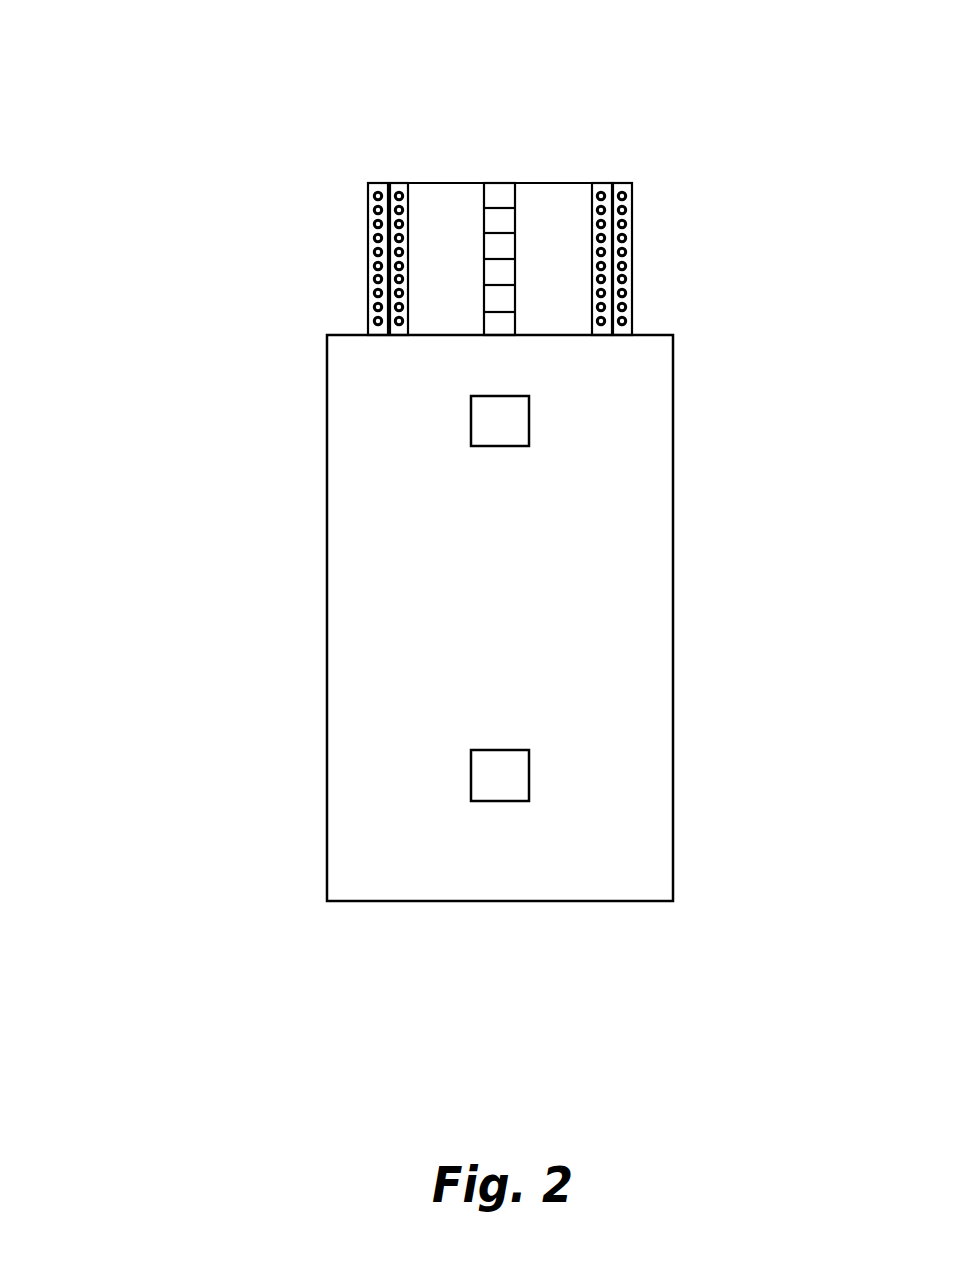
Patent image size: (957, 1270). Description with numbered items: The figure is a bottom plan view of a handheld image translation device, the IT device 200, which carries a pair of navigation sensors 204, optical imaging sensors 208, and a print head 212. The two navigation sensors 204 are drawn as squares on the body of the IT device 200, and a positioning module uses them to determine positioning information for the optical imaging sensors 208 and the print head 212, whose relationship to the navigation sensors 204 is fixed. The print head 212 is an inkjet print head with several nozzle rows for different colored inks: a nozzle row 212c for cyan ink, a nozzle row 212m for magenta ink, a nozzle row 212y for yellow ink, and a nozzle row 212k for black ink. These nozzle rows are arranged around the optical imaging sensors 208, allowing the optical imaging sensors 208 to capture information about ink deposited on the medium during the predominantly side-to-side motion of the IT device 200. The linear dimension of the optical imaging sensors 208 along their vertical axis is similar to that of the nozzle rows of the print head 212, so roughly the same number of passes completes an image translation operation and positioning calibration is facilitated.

The IT device 200 is at (439, 453).
The navigation sensors 204 is at (471, 420).
The optical imaging sensors 208 is at (498, 182).
The print head 212 is at (532, 199).
The nozzle row for cyan-colored ink 212c is at (367, 182).
The nozzle row for magenta-colored ink 212m is at (397, 182).
The nozzle row for yellow-colored ink 212y is at (603, 182).
The nozzle row for black-colored ink 212k is at (633, 182).